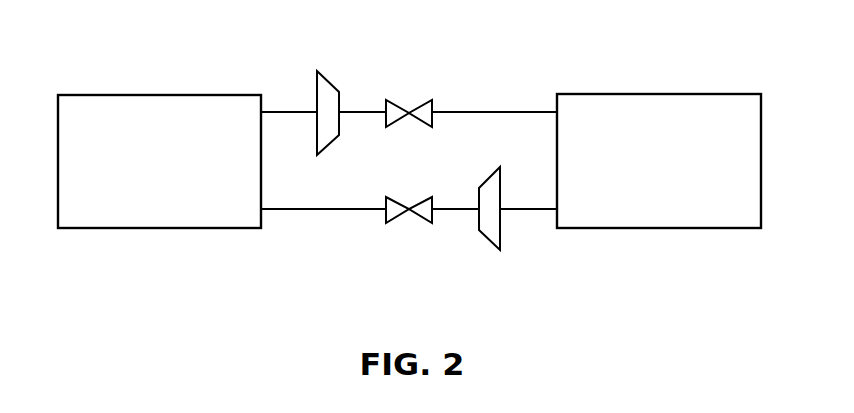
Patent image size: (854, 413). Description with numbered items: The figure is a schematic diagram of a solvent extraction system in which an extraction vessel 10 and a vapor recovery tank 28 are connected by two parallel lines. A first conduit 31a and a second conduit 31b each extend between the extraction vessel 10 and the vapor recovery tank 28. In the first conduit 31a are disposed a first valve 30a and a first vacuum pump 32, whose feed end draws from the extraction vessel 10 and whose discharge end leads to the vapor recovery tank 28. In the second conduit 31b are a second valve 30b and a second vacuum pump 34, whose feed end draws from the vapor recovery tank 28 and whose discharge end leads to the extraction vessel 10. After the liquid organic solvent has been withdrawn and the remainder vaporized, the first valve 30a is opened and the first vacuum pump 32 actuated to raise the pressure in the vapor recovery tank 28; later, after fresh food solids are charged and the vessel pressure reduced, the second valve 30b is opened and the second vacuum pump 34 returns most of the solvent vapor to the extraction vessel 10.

The extraction vessel 10 is at (158, 229).
The vapor recovery tank 28 is at (657, 93).
The first valve 30a is at (409, 112).
The second valve 30b is at (409, 210).
The first conduit 31a is at (490, 112).
The second conduit 31b is at (321, 211).
The first vacuum pump 32 is at (333, 82).
The second vacuum pump 34 is at (487, 242).